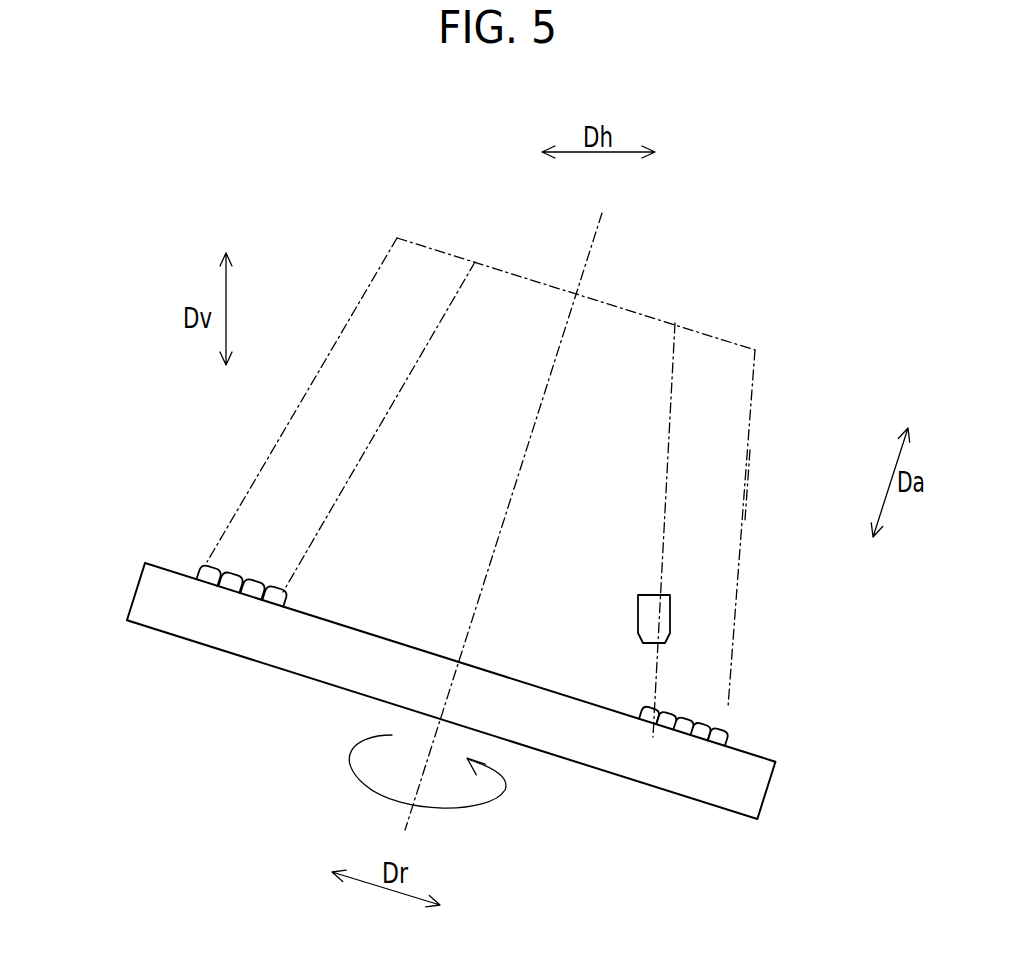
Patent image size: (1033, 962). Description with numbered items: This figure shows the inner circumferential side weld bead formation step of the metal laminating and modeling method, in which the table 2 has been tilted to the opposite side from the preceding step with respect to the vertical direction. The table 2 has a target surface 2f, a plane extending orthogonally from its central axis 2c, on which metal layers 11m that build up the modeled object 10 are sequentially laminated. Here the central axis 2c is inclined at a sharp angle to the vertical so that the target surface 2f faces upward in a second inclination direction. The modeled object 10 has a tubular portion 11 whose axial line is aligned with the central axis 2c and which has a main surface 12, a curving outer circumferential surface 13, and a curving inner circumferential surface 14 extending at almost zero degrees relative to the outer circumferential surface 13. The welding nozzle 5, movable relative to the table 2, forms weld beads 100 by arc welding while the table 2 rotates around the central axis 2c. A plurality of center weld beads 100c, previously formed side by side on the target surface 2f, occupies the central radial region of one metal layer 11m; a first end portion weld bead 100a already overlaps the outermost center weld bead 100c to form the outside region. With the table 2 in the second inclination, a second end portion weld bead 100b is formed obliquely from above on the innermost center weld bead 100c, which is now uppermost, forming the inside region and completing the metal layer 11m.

The table 2 is at (597, 770).
The central axis 2c is at (405, 833).
The target surface 2f is at (503, 676).
The welding nozzle 5 is at (670, 603).
The modeled object 10 is at (762, 438).
The tubular portion 11 is at (757, 372).
The metal layer 11m is at (727, 737).
The main surface 12 is at (710, 333).
The outer circumferential surface 13 is at (748, 477).
The inner circumferential surface 14 is at (663, 490).
The weld bead 100 is at (483, 580).
The first end portion weld bead 100a is at (205, 553).
The second end portion weld bead 100b is at (276, 590).
The center weld bead 100c is at (258, 580).